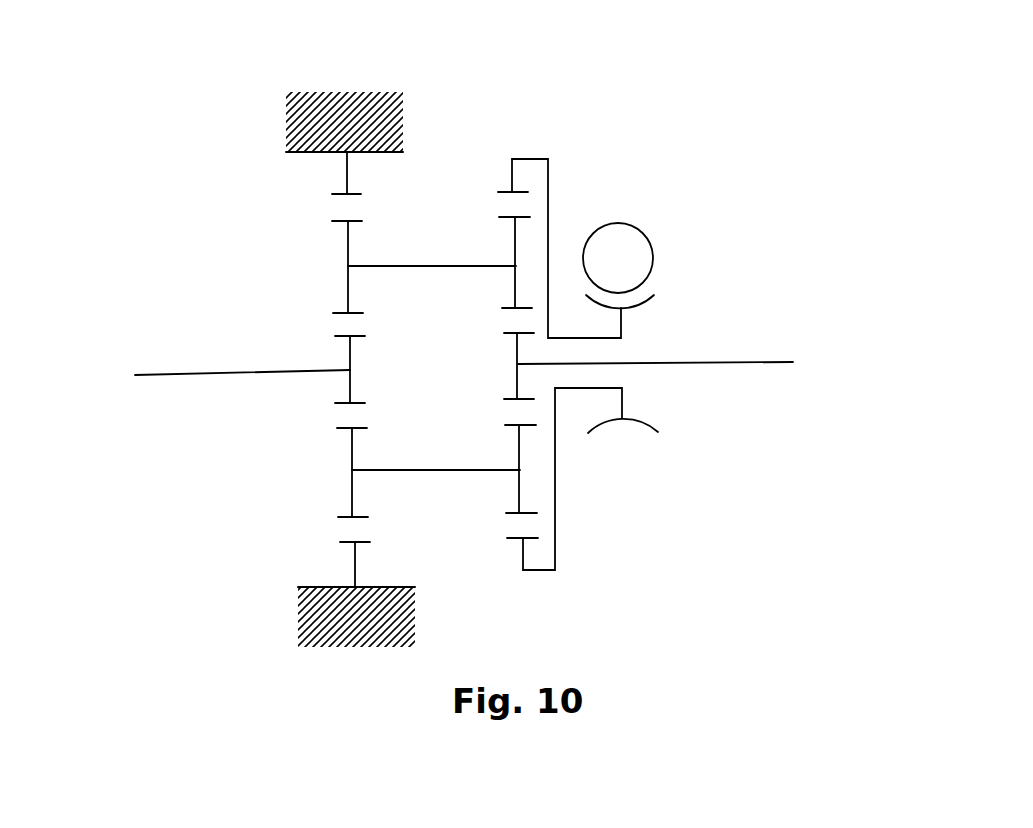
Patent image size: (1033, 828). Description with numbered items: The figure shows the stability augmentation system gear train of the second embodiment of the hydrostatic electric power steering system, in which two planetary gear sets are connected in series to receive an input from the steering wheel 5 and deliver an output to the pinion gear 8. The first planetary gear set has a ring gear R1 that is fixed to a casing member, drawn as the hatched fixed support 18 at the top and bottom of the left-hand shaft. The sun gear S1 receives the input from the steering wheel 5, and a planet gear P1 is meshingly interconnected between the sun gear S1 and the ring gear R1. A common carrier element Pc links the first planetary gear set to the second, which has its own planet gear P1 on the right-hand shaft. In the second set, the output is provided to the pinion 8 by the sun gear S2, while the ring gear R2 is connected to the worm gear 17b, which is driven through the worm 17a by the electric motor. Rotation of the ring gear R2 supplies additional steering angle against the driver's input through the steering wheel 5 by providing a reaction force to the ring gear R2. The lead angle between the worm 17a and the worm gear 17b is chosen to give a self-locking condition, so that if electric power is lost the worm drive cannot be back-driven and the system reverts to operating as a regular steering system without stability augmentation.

The fixed housing / ground 18 is at (303, 71).
The ring gear R1 is at (346, 170).
The planet gear P1 is at (518, 483).
The common carrier element Pc is at (439, 265).
The sun gear S1 is at (350, 388).
The steering wheel 5 is at (186, 365).
The sun gear S2 is at (517, 345).
The ring gear R2 is at (523, 570).
The pinion gear 8 is at (703, 347).
The worm 17a is at (627, 267).
The worm gear 17b is at (637, 419).